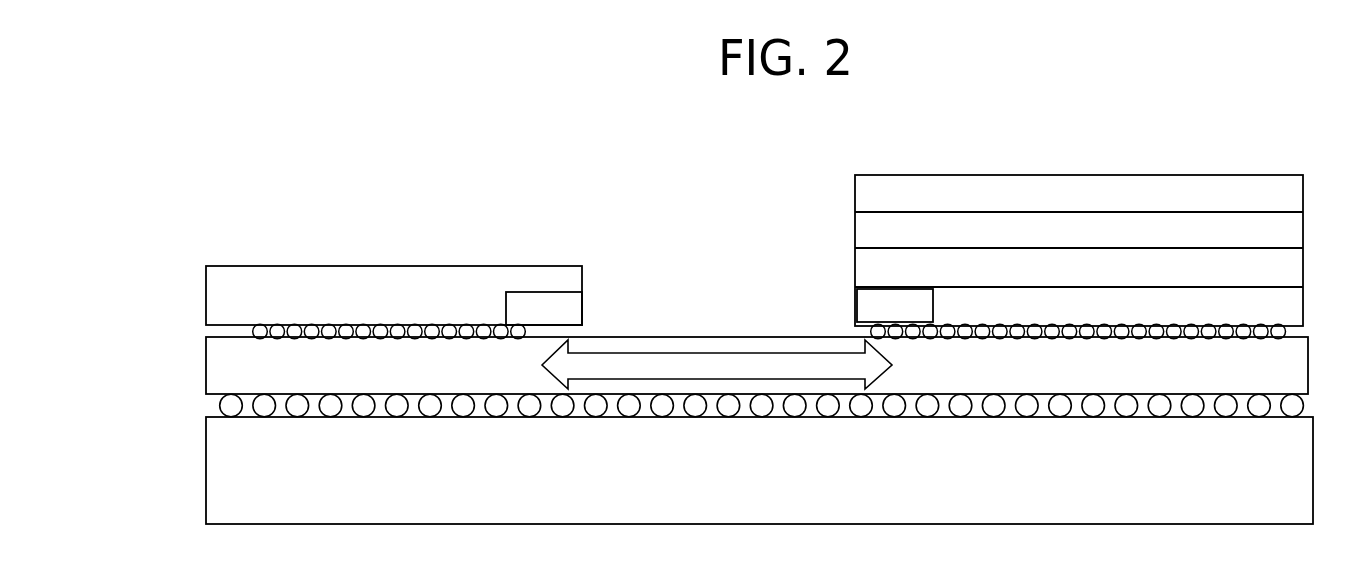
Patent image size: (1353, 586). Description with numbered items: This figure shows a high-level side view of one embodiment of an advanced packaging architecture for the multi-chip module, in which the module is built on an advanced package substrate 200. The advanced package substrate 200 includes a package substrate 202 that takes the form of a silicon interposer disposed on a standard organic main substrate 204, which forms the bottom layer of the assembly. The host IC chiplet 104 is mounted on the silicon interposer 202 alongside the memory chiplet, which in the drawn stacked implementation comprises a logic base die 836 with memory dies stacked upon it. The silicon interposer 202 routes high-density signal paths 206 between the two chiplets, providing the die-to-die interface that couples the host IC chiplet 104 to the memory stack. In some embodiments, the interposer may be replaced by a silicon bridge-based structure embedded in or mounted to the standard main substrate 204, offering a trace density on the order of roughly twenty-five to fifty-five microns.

The advanced package substrate 200 is at (183, 337).
The host IC chiplet 104 is at (488, 306).
The package substrate 202 is at (538, 378).
The main substrate 204 is at (778, 514).
The high-density signal paths 206 is at (825, 376).
The logic base die 836 is at (1202, 316).